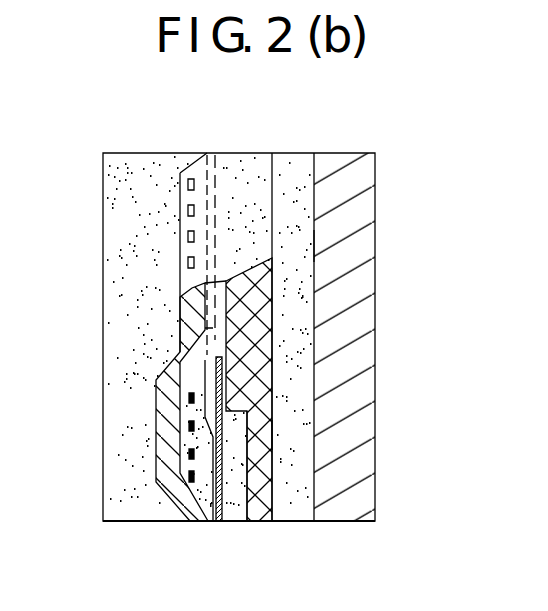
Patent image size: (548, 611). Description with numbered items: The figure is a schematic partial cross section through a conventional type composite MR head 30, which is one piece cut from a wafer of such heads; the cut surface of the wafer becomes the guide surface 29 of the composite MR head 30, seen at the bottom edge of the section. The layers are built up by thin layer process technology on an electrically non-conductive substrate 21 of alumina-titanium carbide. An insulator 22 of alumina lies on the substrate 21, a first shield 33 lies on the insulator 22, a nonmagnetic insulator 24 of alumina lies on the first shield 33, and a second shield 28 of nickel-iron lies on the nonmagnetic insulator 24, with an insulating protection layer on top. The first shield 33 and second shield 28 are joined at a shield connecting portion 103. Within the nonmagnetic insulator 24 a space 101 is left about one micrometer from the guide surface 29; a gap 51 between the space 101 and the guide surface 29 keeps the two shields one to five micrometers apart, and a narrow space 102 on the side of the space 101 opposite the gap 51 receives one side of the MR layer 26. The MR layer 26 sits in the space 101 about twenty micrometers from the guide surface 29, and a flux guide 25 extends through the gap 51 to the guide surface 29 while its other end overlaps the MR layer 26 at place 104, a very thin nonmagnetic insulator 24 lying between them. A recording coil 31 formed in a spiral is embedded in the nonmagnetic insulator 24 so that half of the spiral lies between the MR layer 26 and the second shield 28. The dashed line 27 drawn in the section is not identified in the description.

The substrate 21 is at (362, 505).
The insulator 22 is at (296, 470).
The nonmagnetic insulator 24 is at (257, 150).
The flux guide 25 is at (273, 435).
The MR layer 26 is at (228, 418).
The boundary line 27 is at (208, 150).
The second shield 28 is at (160, 374).
The guide surface 29 is at (153, 524).
The composite MR head 30 is at (103, 230).
The coil 31 is at (188, 424).
The first shield 33 is at (227, 313).
The gap 51 is at (214, 523).
The space 101 is at (262, 522).
The narrow space 102 is at (237, 274).
The connecting portion 103 is at (320, 247).
The connection place 104 is at (225, 400).